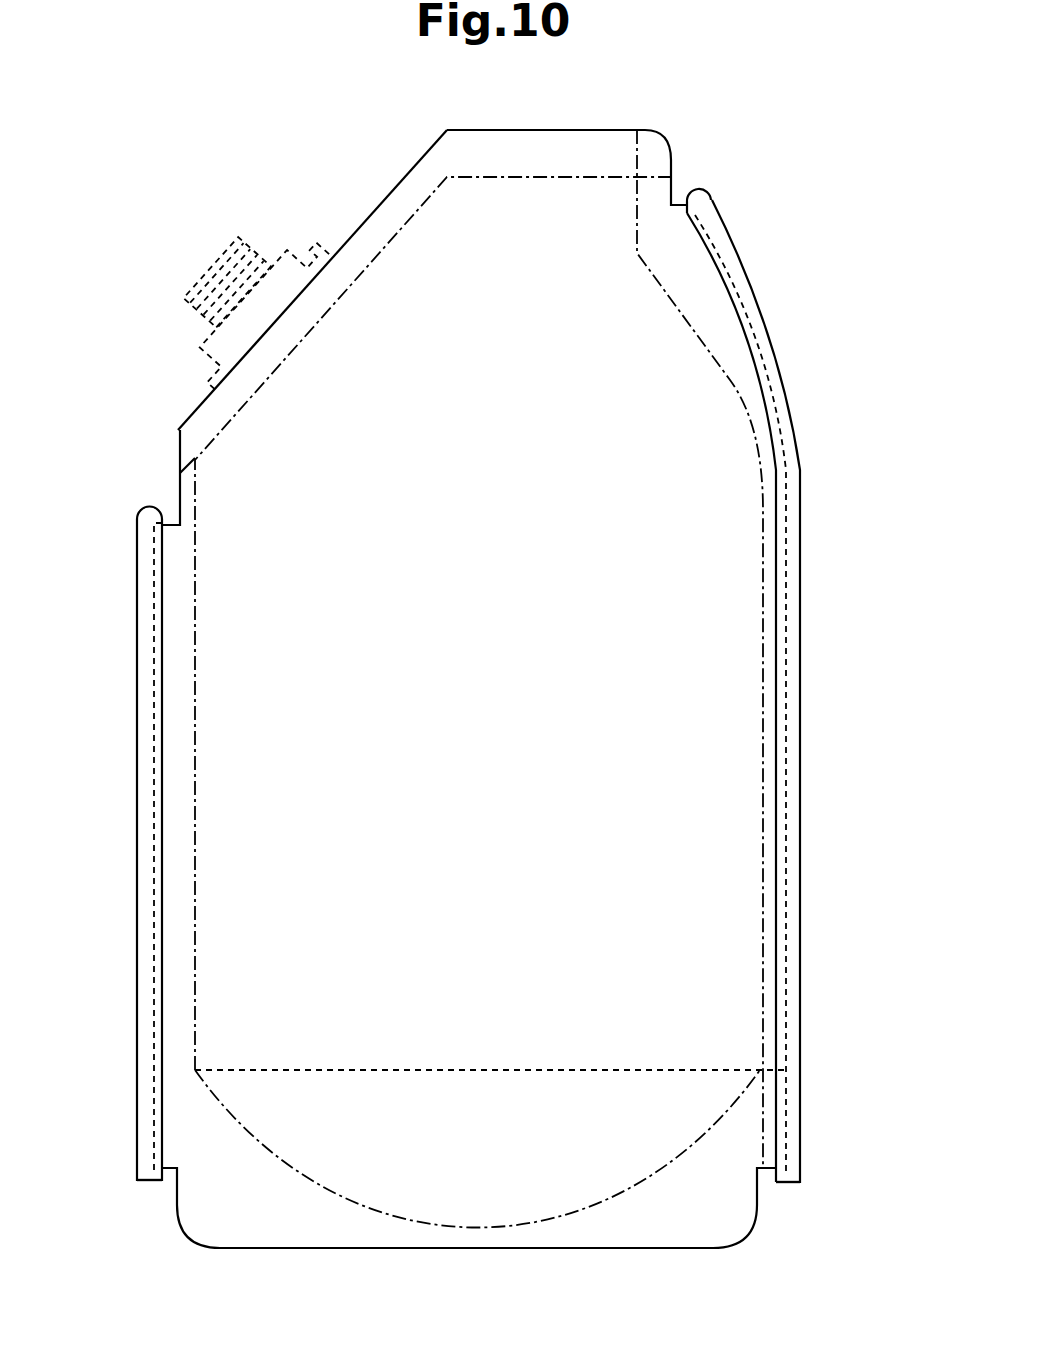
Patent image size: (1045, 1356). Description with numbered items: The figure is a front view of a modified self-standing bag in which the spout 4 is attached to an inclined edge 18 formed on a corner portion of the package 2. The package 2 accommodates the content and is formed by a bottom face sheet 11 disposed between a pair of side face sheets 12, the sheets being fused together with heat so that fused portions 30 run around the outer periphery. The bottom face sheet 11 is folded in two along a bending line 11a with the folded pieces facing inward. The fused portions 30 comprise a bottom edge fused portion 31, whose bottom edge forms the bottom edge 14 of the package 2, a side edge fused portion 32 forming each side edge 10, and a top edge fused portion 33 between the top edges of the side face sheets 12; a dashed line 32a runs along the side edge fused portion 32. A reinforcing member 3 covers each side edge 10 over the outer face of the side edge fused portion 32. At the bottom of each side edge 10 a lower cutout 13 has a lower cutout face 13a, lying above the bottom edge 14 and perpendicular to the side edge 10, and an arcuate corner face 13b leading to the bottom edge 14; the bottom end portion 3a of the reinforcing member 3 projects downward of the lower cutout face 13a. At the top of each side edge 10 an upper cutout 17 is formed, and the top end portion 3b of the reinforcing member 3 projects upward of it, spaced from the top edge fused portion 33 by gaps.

The package 2 is at (755, 114).
The reinforcing member 3 is at (797, 480).
The bottom end portion of the reinforcing member 3a is at (147, 1185).
The top end portion of the reinforcing member 3b is at (707, 187).
The spout 4 is at (295, 247).
The side edge 10 is at (787, 838).
The bottom face sheet 11 is at (385, 1158).
The bending line 11a is at (513, 1068).
The side face sheet 12 is at (724, 602).
The lower cutout 13 is at (129, 1220).
The lower cutout face 13a is at (145, 1170).
The corner face 13b is at (177, 1205).
The bottom edge 14 is at (495, 1248).
The upper cutout 17 is at (151, 474).
The inclined edge 18 is at (335, 247).
The fused portion 30 is at (743, 340).
The bottom edge fused portion 31 is at (633, 1225).
The side edge fused portion 32 is at (770, 766).
The seal inner edge 32a is at (786, 692).
The top edge fused portion 33 is at (457, 147).